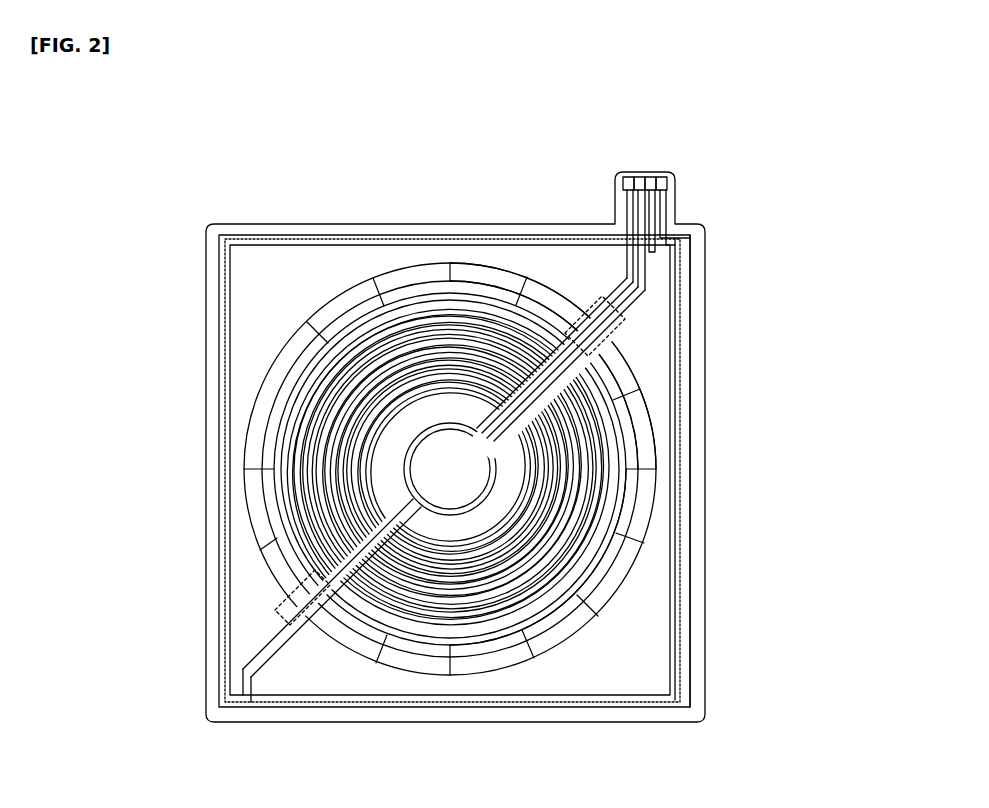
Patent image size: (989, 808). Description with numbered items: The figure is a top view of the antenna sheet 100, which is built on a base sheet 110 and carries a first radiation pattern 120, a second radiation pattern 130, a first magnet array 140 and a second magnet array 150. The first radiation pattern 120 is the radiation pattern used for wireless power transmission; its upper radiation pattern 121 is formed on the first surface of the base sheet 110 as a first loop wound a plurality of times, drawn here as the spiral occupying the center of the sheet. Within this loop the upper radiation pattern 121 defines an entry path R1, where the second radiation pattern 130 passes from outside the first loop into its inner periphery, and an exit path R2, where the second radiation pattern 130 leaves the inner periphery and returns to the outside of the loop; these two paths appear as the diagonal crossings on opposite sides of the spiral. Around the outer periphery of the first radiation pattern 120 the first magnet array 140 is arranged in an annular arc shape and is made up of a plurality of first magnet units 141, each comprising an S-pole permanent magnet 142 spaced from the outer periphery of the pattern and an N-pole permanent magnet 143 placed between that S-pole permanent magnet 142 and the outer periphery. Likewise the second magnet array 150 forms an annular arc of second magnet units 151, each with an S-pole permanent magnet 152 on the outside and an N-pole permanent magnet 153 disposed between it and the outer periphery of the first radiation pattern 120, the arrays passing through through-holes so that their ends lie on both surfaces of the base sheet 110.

The antenna sheet 100 is at (113, 137).
The base sheet 110 is at (206, 350).
The first radiation pattern 120 is at (554, 466).
The upper radiation pattern 121 is at (665, 433).
The second radiation pattern 130 is at (219, 424).
The first magnet array 140 is at (345, 290).
The first magnet unit 141 is at (551, 293).
The S-pole permanent magnet 142 is at (517, 278).
The N-pole permanent magnet 143 is at (472, 266).
The second magnet array 150 is at (530, 650).
The second magnet unit 151 is at (751, 471).
The S-pole permanent magnet 152 is at (655, 497).
The N-pole permanent magnet 153 is at (650, 532).
The entry path R1 is at (620, 343).
The exit path R2 is at (290, 603).